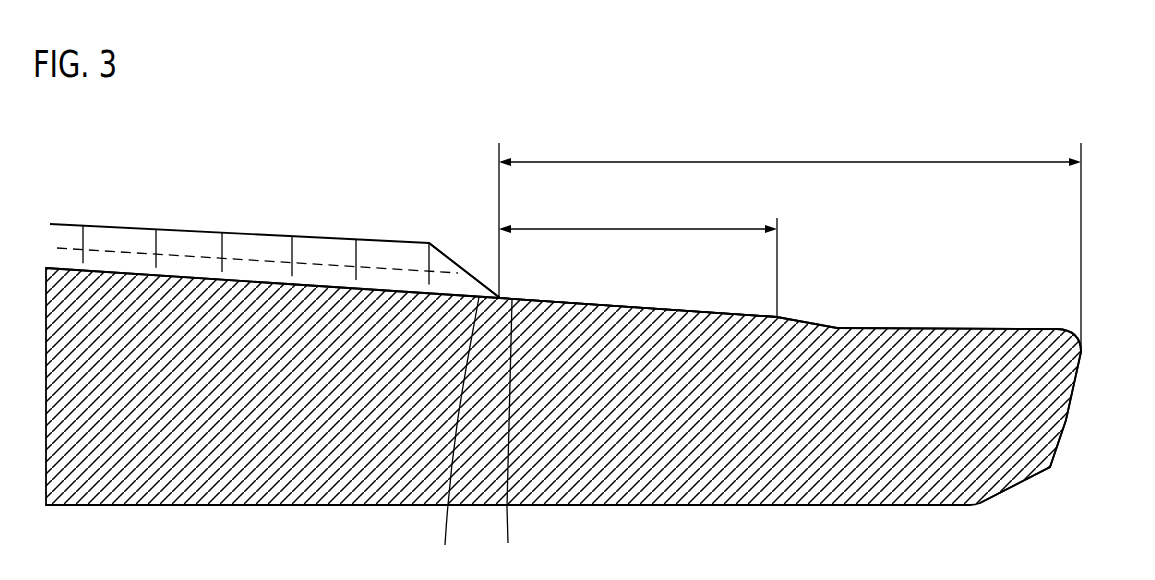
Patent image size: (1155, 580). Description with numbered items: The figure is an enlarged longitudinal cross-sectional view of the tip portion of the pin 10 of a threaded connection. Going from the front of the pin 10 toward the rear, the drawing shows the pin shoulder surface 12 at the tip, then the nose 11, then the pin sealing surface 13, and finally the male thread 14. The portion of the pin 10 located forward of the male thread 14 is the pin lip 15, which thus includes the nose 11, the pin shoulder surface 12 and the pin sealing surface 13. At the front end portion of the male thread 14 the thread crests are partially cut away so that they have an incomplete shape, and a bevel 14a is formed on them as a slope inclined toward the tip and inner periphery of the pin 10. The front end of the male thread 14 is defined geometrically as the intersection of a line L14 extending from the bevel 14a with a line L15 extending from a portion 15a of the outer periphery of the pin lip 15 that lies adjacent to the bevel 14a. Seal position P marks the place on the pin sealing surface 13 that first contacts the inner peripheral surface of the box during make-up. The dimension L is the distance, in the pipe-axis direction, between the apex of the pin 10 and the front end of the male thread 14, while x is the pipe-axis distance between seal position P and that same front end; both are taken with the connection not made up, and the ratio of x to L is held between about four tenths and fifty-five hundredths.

The pin 10 is at (238, 514).
The nose 11 is at (960, 355).
The pin shoulder surface 12 is at (1061, 425).
The pin sealing surface 13 is at (803, 309).
The male thread 14 is at (240, 233).
The bevel 14a is at (458, 265).
The pin lip 15 is at (637, 507).
The portion of the outer periphery of the pin lip 15a is at (655, 308).
The line extending from the outer periphery portion of the pin lip L15 is at (454, 437).
The line extending from the bevel L14 is at (512, 439).
The length of the pin lip L is at (790, 245).
The distance between seal position and front end of male thread x is at (638, 220).
The seal position P is at (775, 256).